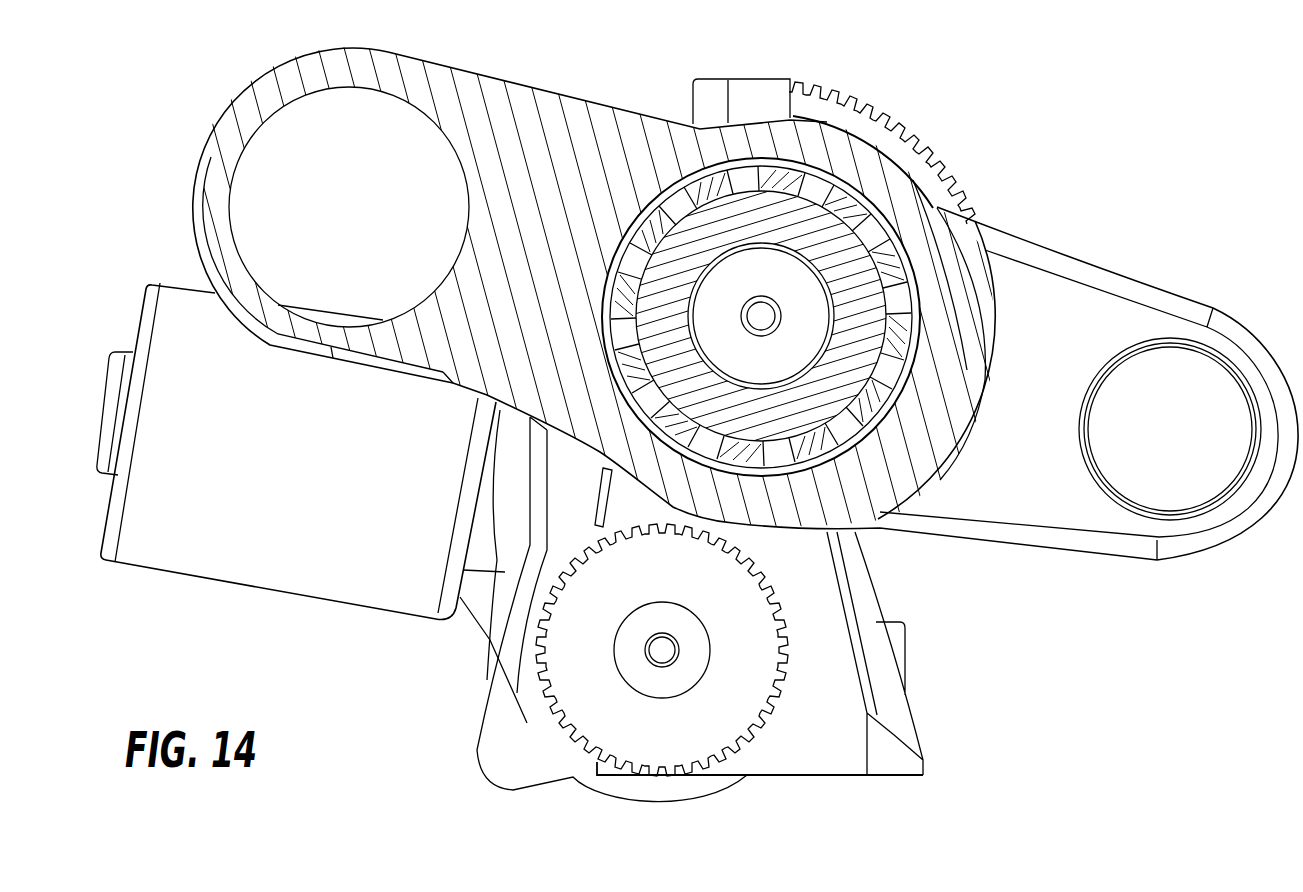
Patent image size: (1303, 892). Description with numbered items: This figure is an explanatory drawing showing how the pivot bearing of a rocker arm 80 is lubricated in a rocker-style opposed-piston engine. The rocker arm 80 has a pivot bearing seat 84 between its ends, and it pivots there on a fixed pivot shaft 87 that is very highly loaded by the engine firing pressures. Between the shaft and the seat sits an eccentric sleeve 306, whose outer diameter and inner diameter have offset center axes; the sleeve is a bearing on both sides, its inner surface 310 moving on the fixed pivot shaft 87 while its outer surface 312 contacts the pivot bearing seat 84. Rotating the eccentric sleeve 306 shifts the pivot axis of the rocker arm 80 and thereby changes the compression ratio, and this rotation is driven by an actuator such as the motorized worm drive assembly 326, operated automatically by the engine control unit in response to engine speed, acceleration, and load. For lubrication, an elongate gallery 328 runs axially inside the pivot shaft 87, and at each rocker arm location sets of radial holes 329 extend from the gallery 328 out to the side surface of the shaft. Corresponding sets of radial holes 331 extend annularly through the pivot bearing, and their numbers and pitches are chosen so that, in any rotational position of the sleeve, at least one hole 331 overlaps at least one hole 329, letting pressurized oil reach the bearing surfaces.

The rocker arm 80 is at (438, 443).
The pivot bearing seat 84 is at (933, 392).
The pivot shaft 87 is at (855, 378).
The eccentric sleeve 306 is at (622, 300).
The inner surface 310 is at (690, 435).
The outer surface 312 is at (917, 325).
The motorized worm drive assembly 326 is at (188, 578).
The elongate gallery 328 is at (790, 283).
The radial holes 329 is at (668, 307).
The radial holes 331 is at (670, 207).